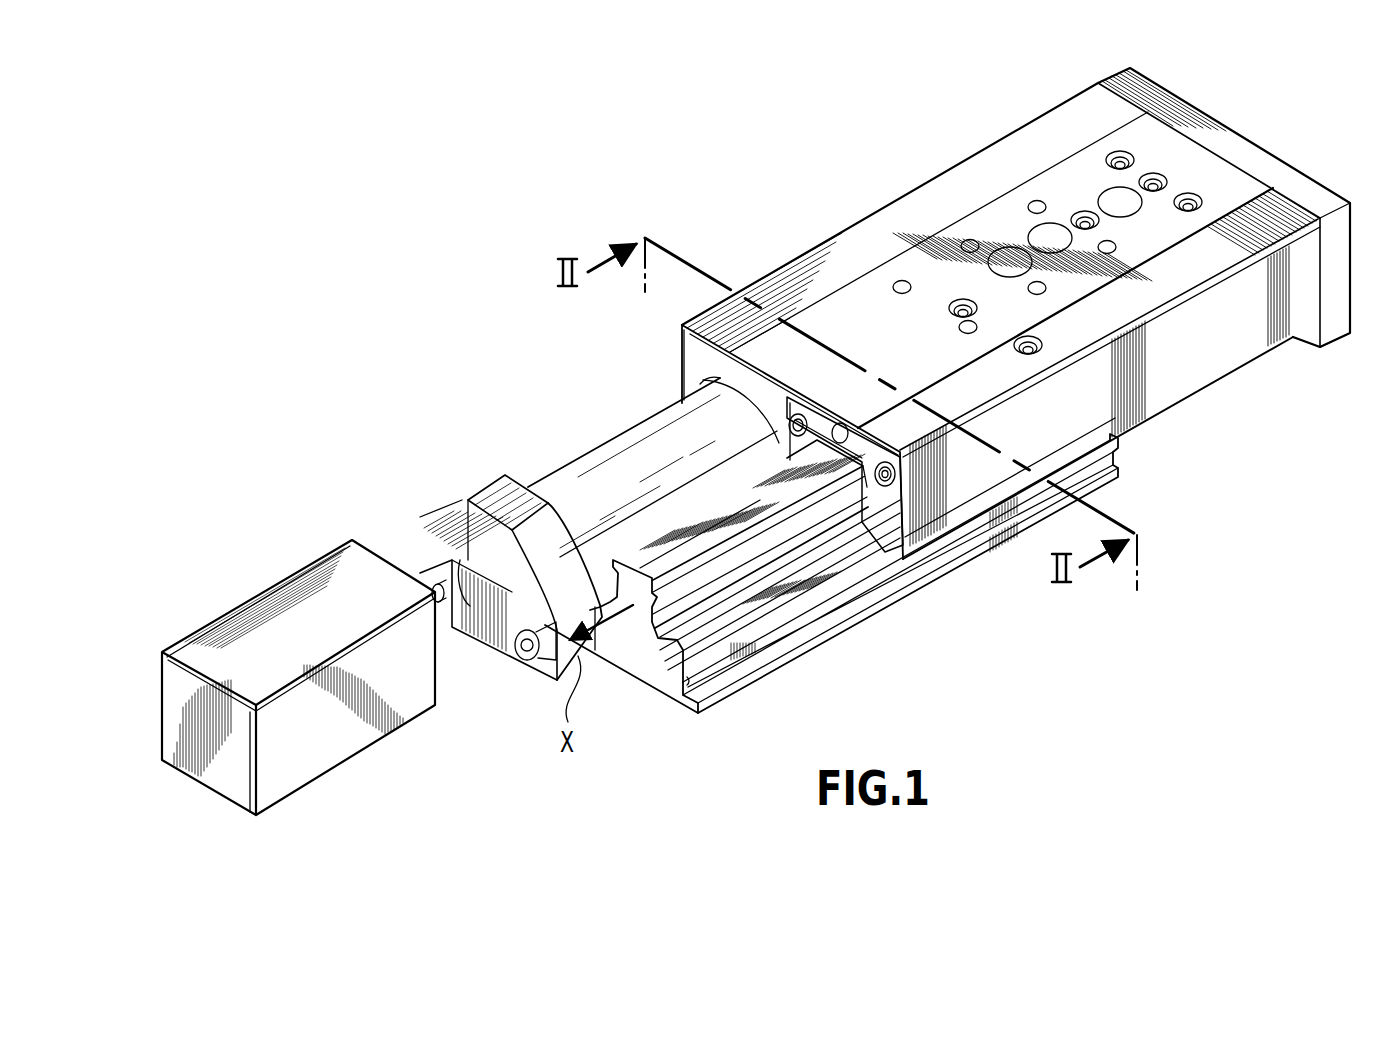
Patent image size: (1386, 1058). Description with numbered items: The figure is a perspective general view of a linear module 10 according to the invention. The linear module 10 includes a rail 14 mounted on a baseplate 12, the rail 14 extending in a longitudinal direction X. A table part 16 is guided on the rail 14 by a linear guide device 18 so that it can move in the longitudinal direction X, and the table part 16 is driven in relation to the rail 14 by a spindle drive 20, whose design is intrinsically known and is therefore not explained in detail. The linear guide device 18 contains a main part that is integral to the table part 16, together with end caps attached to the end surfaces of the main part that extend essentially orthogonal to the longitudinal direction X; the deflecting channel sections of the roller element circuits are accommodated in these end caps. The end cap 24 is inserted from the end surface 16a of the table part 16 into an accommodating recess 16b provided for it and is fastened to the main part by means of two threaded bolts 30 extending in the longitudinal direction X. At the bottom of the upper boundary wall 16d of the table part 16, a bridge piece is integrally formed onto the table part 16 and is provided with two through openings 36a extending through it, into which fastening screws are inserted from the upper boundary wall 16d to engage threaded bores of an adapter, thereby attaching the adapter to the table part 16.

The linear module 10 is at (434, 290).
The baseplate 12 is at (672, 683).
The rail 14 is at (640, 626).
The table part 16 is at (912, 208).
The end surface 16a is at (690, 357).
The accommodating recess 16b is at (787, 440).
The upper boundary wall 16d is at (1143, 295).
The linear guide device 18 is at (867, 550).
The spindle drive 20 is at (298, 488).
The end cap 24 is at (883, 505).
The threaded bolts 30 is at (895, 482).
The through openings 36a is at (1022, 343).